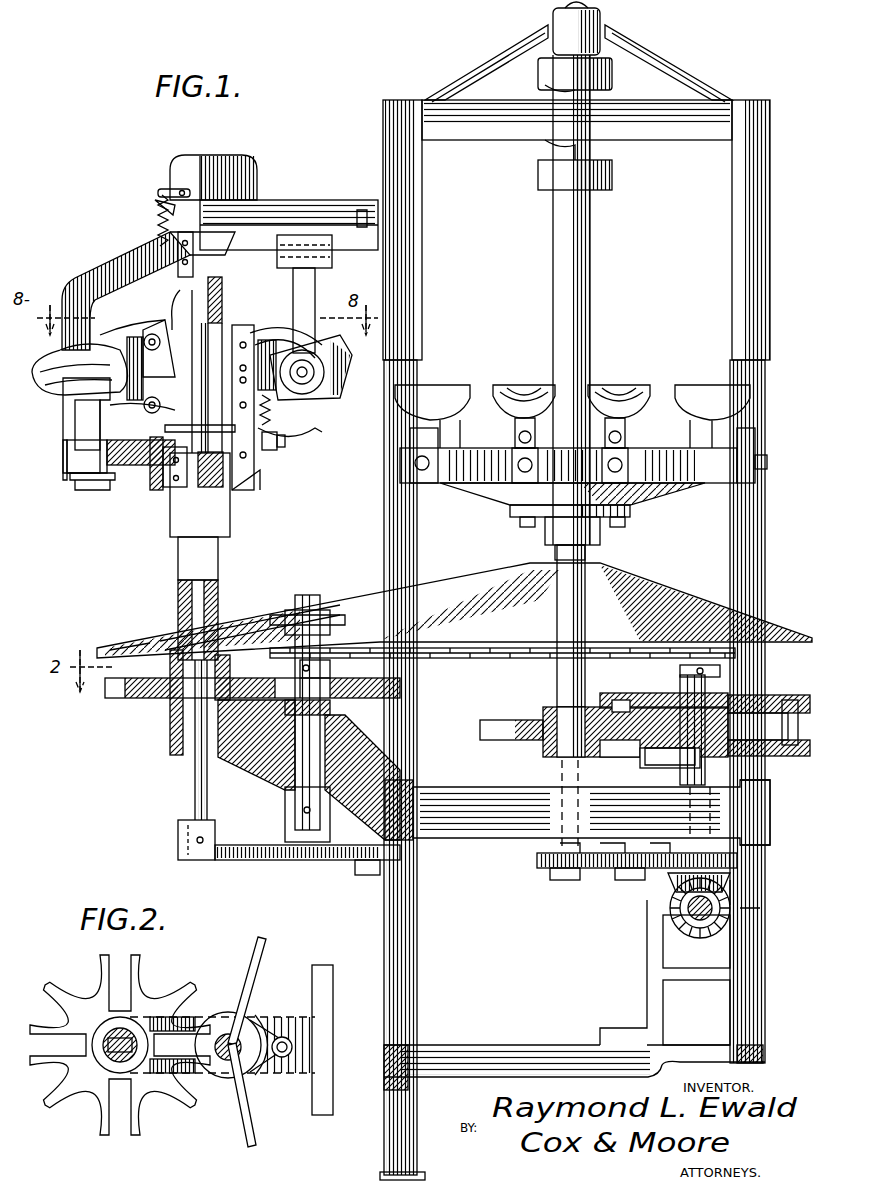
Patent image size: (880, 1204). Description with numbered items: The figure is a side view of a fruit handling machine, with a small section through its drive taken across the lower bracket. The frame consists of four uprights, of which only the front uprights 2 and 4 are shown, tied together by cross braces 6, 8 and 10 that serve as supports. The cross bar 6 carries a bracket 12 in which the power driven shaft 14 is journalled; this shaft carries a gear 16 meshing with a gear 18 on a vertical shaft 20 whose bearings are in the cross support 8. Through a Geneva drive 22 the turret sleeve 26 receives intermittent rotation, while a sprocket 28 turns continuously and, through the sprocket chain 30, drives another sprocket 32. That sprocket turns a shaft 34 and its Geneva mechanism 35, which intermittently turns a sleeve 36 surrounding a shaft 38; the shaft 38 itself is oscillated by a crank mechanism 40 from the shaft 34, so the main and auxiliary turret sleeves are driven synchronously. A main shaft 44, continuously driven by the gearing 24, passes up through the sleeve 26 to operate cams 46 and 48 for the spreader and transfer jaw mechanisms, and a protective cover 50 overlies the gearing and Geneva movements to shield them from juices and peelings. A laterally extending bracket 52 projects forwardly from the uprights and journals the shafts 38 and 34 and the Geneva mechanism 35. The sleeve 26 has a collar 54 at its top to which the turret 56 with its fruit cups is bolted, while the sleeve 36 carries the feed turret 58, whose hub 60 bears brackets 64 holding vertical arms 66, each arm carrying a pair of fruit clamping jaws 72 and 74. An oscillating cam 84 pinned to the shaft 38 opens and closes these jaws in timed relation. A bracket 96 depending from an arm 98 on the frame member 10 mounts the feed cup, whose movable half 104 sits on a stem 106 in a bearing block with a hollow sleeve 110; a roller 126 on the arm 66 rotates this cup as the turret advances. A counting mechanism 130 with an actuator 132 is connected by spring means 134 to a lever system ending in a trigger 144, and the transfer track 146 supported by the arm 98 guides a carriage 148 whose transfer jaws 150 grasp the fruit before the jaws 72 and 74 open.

In FIG. 1, the front upright 2 is at (410, 331).
In FIG. 1, the front upright 4 is at (757, 320).
In FIG. 1, the cross brace 6 is at (485, 1055).
In FIG. 1, the cross support 8 is at (463, 835).
In FIG. 1, the cross brace 10 is at (500, 130).
In FIG. 1, the bracket 12 is at (655, 955).
In FIG. 1, the power driven shaft 14 is at (740, 908).
In FIG. 1, the gear 16 is at (670, 905).
In FIG. 1, the gear 18 is at (725, 880).
In FIG. 1, the vertical shaft 20 is at (700, 805).
In FIG. 1, the Geneva drive 22 is at (648, 748).
In FIG. 1, the gearing 24 is at (608, 860).
In FIG. 1, the turret sleeve 26 is at (563, 677).
In FIG. 1, the sprocket 28 is at (710, 670).
In FIG. 1, the sprocket chain 30 is at (620, 651).
In FIG. 1, the sprocket 32 is at (320, 665).
In FIG. 1, the shaft 34 is at (318, 733).
In FIG. 2, the shaft 34 is at (232, 1040).
In FIG. 1, the Geneva mechanism 35 is at (282, 712).
In FIG. 2, the Geneva mechanism 35 is at (240, 1080).
In FIG. 1, the sleeve 36 is at (183, 566).
In FIG. 2, the sleeve 36 is at (112, 1060).
In FIG. 1, the shaft 38 is at (220, 585).
In FIG. 2, the shaft 38 is at (110, 1032).
In FIG. 1, the crank mechanism 40 is at (318, 858).
In FIG. 1, the main shaft 44 is at (570, 703).
In FIG. 1, the cam 46 is at (541, 178).
In FIG. 1, the cam 48 is at (541, 80).
In FIG. 1, the protective cover 50 is at (660, 580).
In FIG. 1, the laterally extending bracket 52 is at (248, 760).
In FIG. 1, the collar 54 is at (565, 510).
In FIG. 1, the turret 56 is at (465, 475).
In FIG. 1, the turret 58 is at (228, 515).
In FIG. 1, the hub 60 is at (183, 525).
In FIG. 1, the bracket 64 is at (150, 485).
In FIG. 1, the arm 66 is at (258, 478).
In FIG. 1, the fruit clamping jaw 72 is at (110, 410).
In FIG. 1, the fruit clamping jaw 74 is at (107, 337).
In FIG. 1, the oscillating cam 84 is at (185, 492).
In FIG. 1, the bracket 96 is at (158, 217).
In FIG. 1, the arm 98 is at (308, 200).
In FIG. 1, the movable half of the cup 104 is at (72, 390).
In FIG. 1, the stem 106 is at (80, 432).
In FIG. 1, the hollow sleeve 110 is at (80, 485).
In FIG. 1, the roller 126 is at (272, 455).
In FIG. 1, the counting mechanism 130 is at (218, 143).
In FIG. 1, the actuator 132 is at (165, 190).
In FIG. 1, the spring means 134 is at (158, 212).
In FIG. 1, the trigger 144 is at (150, 300).
In FIG. 1, the track 146 is at (255, 250).
In FIG. 1, the carriage 148 is at (320, 240).
In FIG. 1, the transfer jaws 150 is at (314, 370).